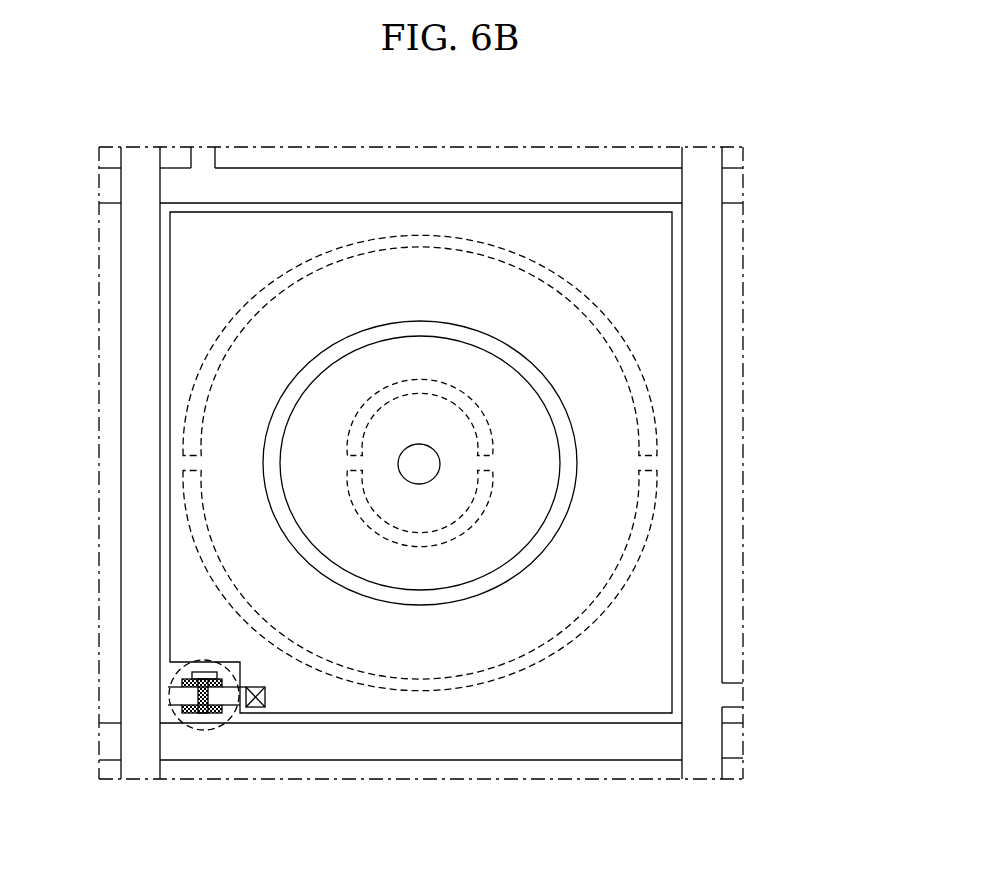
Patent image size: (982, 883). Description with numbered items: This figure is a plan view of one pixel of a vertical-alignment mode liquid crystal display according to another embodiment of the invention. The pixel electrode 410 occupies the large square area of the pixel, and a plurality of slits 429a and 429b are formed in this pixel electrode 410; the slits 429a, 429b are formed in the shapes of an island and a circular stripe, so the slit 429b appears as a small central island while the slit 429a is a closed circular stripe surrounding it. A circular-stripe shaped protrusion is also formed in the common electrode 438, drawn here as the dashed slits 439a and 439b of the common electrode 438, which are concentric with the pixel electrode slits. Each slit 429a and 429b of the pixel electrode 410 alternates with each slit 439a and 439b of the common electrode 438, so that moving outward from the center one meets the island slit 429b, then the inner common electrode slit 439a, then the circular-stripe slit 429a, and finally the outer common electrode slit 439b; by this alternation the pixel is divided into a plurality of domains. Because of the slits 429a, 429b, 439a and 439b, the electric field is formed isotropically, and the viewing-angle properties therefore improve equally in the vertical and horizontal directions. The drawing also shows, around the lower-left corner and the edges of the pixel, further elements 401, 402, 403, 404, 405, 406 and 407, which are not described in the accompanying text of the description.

The substrate 401 is at (570, 742).
The data line 402 is at (702, 662).
The gate electrode / thin film transistor 403 is at (207, 728).
The source electrode 404 is at (200, 718).
The drain electrode 405 is at (217, 718).
The gate line 406 is at (178, 700).
The contact hole 407 is at (220, 700).
The pixel electrode 410 is at (672, 295).
The slit 429a is at (553, 525).
The slit 429b is at (440, 463).
The common electrode 438 is at (676, 255).
The slit 439a is at (458, 412).
The slit 439b is at (643, 410).